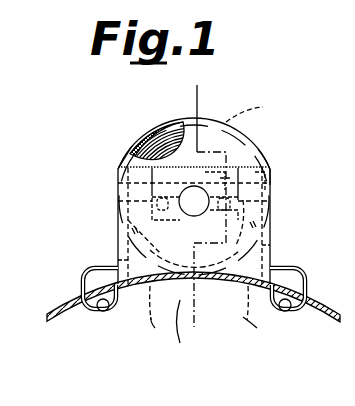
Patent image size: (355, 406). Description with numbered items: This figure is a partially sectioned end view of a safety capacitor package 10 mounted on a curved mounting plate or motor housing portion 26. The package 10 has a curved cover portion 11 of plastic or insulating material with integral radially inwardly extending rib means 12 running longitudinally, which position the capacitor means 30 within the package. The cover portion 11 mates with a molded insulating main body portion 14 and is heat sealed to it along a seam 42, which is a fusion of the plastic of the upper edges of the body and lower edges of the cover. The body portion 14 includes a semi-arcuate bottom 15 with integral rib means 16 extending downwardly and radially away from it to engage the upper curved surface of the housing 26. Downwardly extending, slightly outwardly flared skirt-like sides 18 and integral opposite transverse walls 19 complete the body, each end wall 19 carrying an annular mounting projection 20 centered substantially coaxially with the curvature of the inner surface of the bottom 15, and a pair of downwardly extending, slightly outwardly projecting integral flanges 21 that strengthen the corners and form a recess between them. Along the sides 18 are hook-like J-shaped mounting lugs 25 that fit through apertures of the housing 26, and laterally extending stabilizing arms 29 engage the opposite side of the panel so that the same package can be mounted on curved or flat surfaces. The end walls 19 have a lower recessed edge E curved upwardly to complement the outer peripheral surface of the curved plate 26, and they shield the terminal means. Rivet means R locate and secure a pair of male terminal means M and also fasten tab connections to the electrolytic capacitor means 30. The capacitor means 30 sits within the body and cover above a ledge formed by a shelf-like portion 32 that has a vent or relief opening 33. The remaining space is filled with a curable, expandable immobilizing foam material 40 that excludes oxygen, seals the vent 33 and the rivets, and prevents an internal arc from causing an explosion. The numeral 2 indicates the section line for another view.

The section line 2- 2 is at (206, 95).
The safety capacitor package 10 is at (118, 206).
The cover portion 11 is at (120, 150).
The rib means 12 is at (160, 122).
The main body portion 14 is at (118, 168).
The semi-arcuate bottom 15 is at (118, 227).
The rib means 16 is at (202, 316).
The sides 18 is at (118, 260).
The transverse walls 19 is at (128, 236).
The annular mounting projections 20 is at (232, 232).
The integral flanges 21 is at (227, 232).
The J-shaped mounting lugs 25 is at (103, 311).
The motor housing portion 26 is at (334, 310).
The stabilizing arms 29 is at (84, 278).
The capacitor means 30 is at (189, 133).
The shelf-like portion 32 is at (268, 143).
The vent 33 is at (197, 186).
The immobilizing material 40 is at (143, 137).
The seam 42 is at (270, 169).
The rivet means R is at (118, 183).
The male terminal means M is at (118, 201).
The lower recessed edge E is at (185, 323).